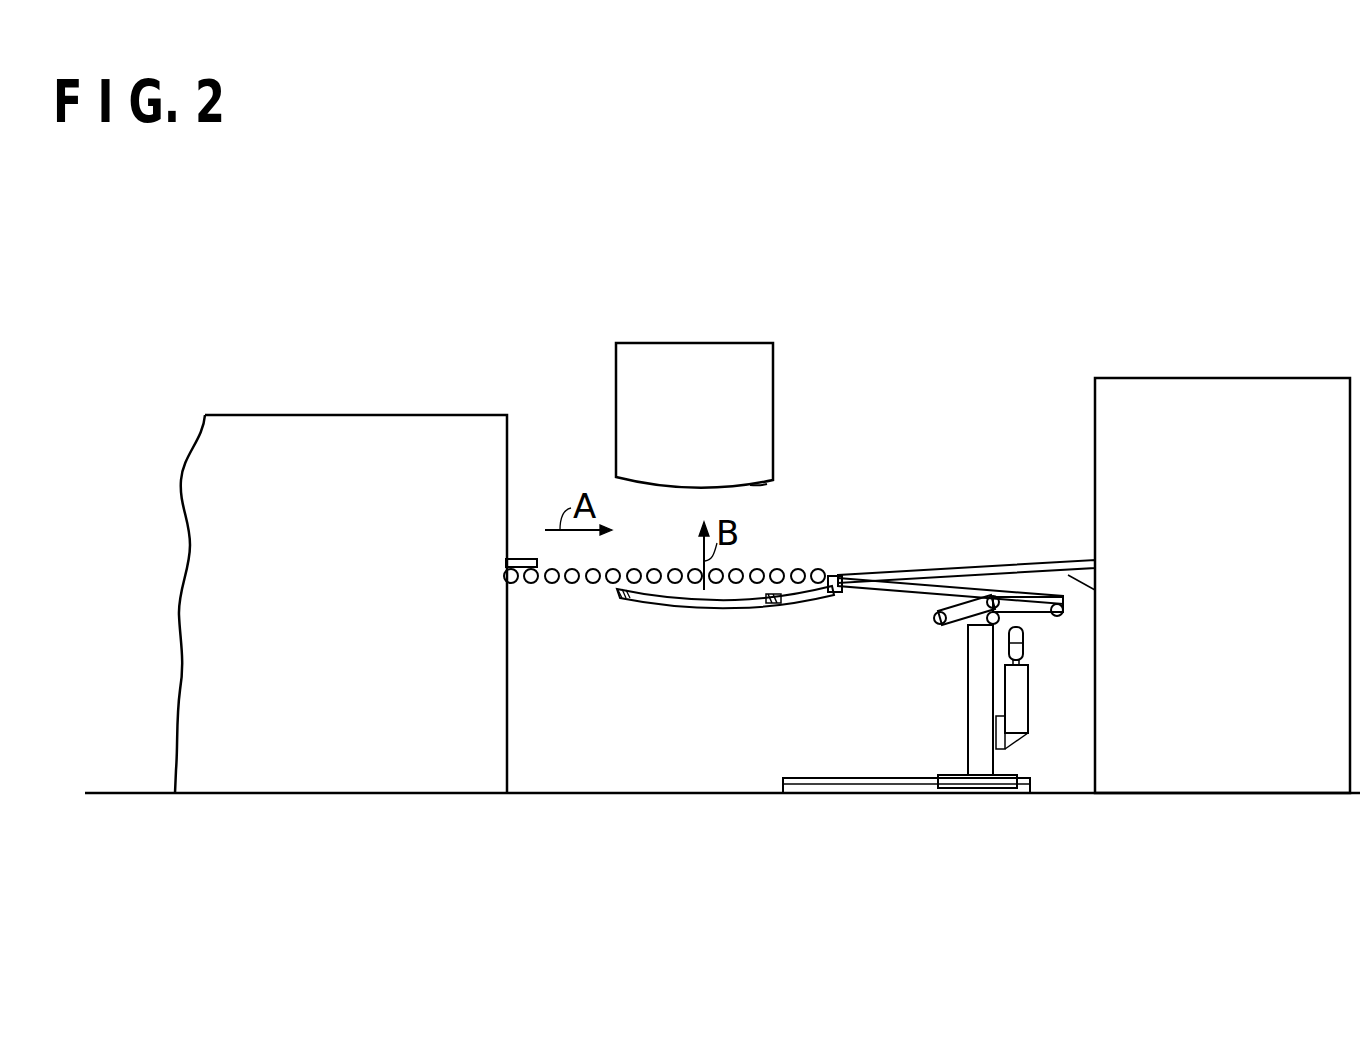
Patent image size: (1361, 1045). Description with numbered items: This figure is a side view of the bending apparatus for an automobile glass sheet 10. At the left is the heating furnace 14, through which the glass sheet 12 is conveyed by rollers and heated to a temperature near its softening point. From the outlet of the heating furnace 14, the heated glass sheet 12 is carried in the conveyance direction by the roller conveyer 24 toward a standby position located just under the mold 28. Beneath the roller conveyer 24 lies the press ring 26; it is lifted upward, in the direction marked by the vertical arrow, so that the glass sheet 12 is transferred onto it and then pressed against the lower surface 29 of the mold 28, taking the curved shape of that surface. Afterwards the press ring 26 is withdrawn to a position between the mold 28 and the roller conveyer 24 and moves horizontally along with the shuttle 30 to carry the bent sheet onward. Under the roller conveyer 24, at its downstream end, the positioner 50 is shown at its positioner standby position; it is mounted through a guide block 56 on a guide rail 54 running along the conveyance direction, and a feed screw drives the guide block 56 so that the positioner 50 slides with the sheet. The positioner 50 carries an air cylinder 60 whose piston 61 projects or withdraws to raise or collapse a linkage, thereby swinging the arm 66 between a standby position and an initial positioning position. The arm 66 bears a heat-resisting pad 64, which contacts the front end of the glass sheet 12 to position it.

The bending apparatus for an automobile glass sheet 10 is at (958, 266).
The glass sheet 12 is at (530, 557).
The heating furnace 14 is at (384, 414).
The roller conveyer 24 is at (578, 585).
The press ring 26 is at (735, 607).
The mold 28 is at (760, 423).
The lower surface 29 is at (753, 488).
The shuttle 30 is at (1034, 561).
The positioner 50 is at (965, 648).
The guide rail 54 is at (820, 778).
The guide block 56 is at (946, 775).
The air cylinder 60 is at (1020, 703).
The piston 61 is at (1024, 661).
The pad 64 is at (833, 597).
The arm 66 is at (897, 577).